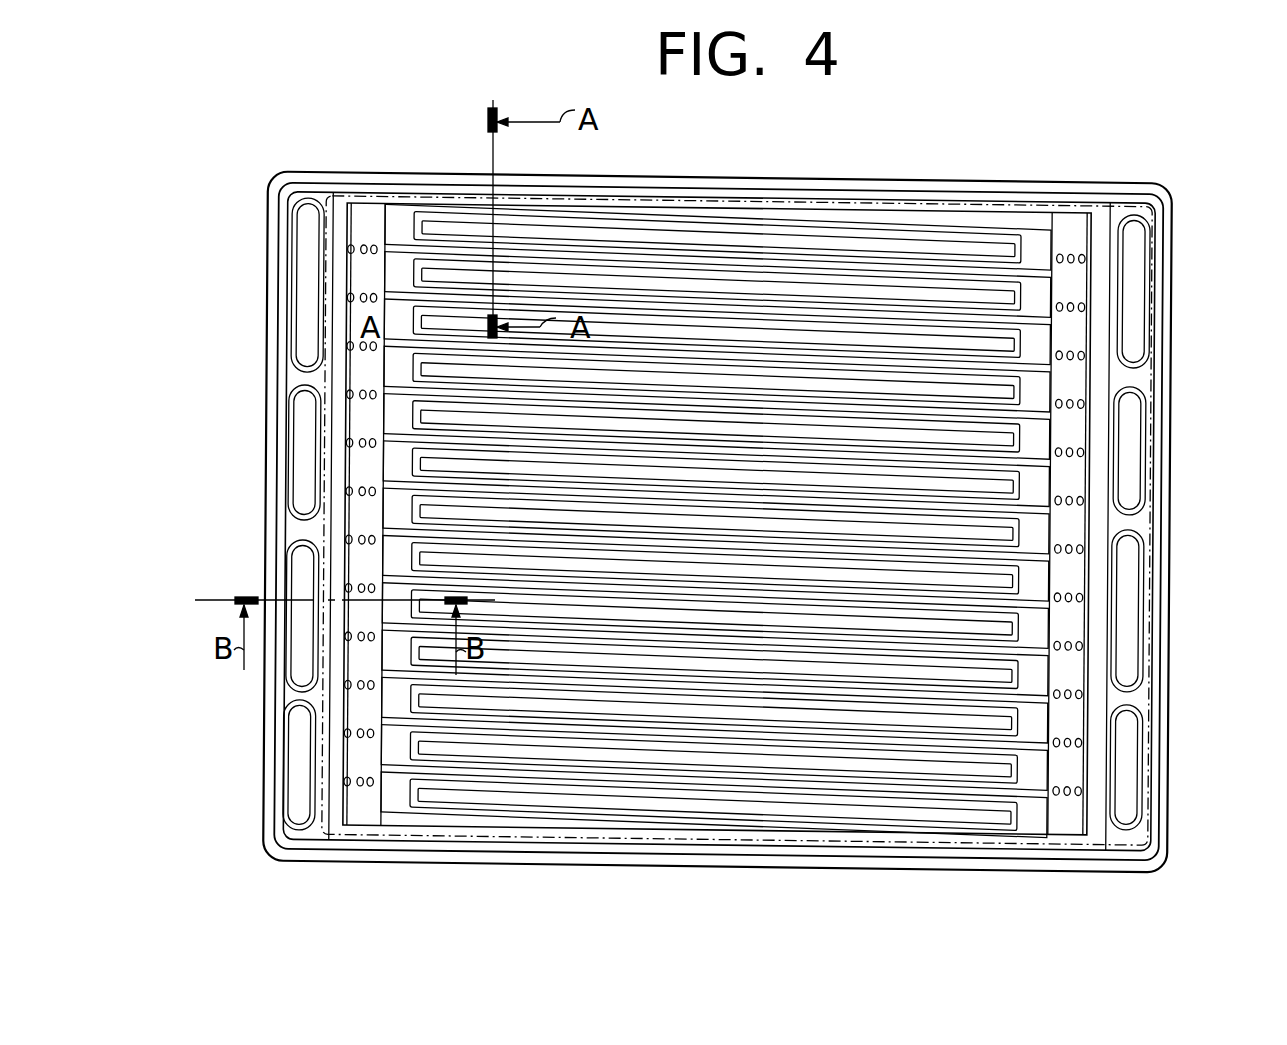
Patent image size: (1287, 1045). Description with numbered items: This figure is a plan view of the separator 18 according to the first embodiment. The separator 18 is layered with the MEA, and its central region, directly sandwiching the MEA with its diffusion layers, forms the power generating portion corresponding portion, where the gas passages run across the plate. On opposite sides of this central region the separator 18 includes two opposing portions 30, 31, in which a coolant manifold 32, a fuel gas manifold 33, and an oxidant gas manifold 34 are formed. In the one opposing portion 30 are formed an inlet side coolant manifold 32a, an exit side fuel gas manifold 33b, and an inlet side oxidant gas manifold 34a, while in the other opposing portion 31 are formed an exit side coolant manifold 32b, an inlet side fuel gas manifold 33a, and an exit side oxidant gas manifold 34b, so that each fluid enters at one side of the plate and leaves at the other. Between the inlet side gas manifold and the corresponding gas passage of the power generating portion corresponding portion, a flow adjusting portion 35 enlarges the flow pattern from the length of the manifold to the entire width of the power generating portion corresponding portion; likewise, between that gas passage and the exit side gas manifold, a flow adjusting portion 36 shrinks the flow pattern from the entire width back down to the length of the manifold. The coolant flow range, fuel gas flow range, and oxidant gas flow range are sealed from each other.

The separator 18 is at (812, 182).
The opposing portion 30 is at (353, 786).
The opposing portion 31 is at (1058, 810).
The coolant manifold 32 is at (300, 572).
The inlet side coolant manifold 32a is at (298, 565).
The exit side coolant manifold 32b is at (1130, 258).
The fuel gas manifold 33 is at (1130, 465).
The inlet side fuel gas manifold 33a is at (1135, 437).
The exit side fuel gas manifold 33b is at (298, 777).
The oxidant gas manifold 34 is at (300, 282).
The inlet side oxidant gas manifold 34a is at (300, 432).
The exit side oxidant gas manifold 34b is at (1130, 600).
The flow adjusting portion 35 is at (371, 228).
The flow adjusting portion 36 is at (1072, 238).